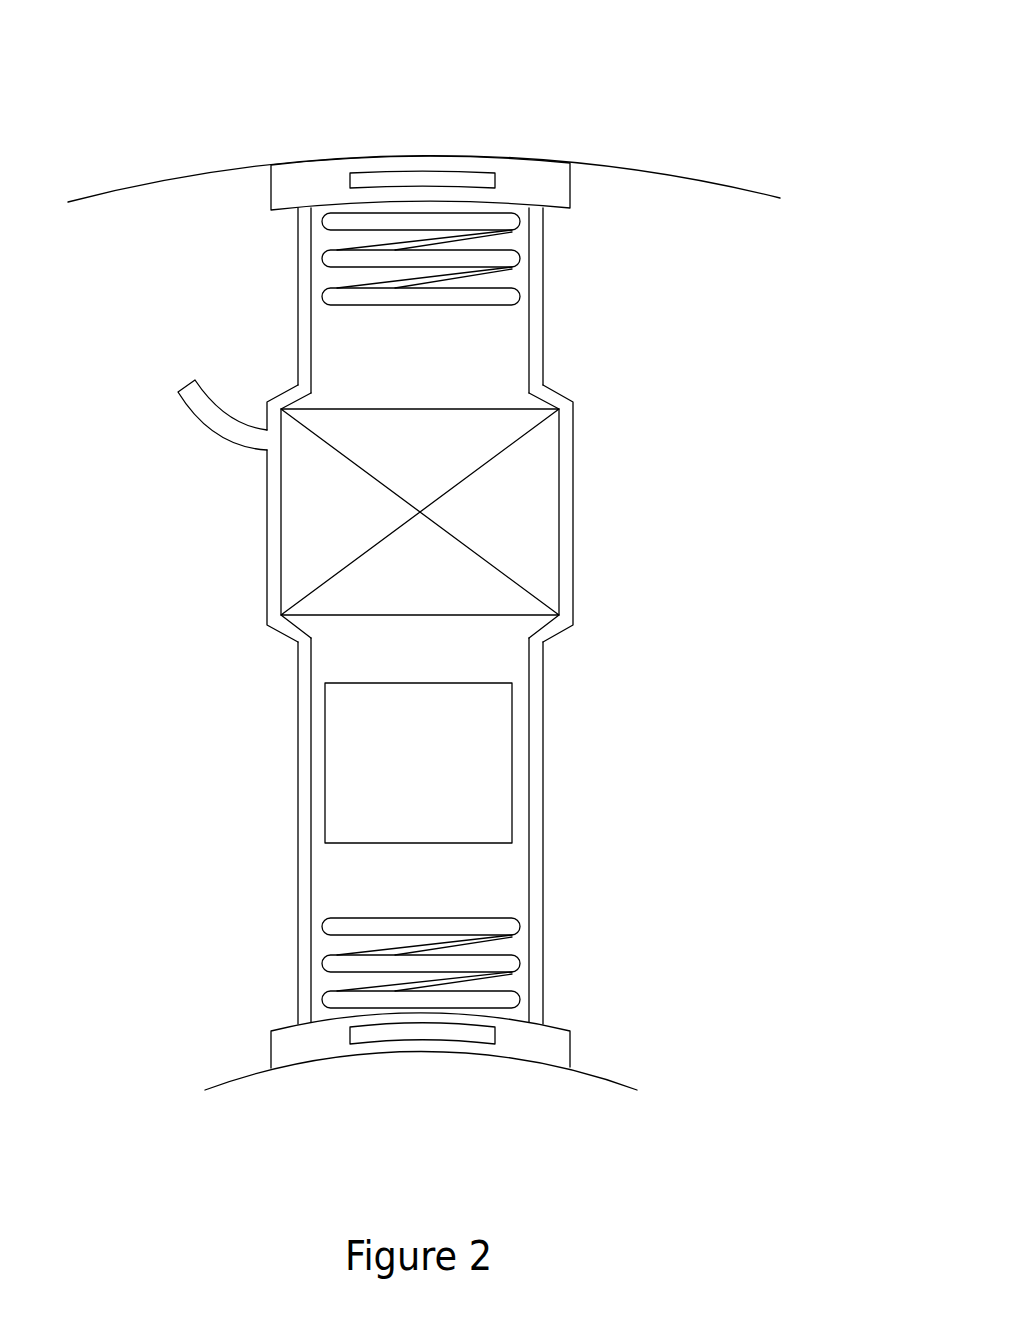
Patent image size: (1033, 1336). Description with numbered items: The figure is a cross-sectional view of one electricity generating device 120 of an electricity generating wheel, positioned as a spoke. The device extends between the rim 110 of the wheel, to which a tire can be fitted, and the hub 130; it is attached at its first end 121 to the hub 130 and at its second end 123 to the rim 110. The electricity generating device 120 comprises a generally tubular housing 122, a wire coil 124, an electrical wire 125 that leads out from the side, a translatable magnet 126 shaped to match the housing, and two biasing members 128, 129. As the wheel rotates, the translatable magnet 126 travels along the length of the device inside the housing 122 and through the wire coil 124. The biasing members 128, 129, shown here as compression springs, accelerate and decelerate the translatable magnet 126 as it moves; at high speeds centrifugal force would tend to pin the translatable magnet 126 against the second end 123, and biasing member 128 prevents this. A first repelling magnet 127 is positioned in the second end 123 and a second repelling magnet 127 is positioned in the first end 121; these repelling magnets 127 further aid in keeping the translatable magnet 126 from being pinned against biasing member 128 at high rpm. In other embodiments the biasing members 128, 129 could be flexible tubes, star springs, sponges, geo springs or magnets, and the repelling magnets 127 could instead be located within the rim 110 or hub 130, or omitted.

The rim 110 is at (282, 135).
The electricity generating device 120 is at (542, 70).
The first end 121 is at (537, 922).
The housing 122 is at (558, 397).
The second end 123 is at (305, 298).
The wire coil 124 is at (532, 527).
The electrical wire 125 is at (227, 428).
The translatable magnet 126 is at (488, 778).
The first repelling magnet 127 is at (403, 173).
The biasing member 128 is at (513, 258).
The biasing member 129 is at (348, 925).
The hub 130 is at (437, 1120).